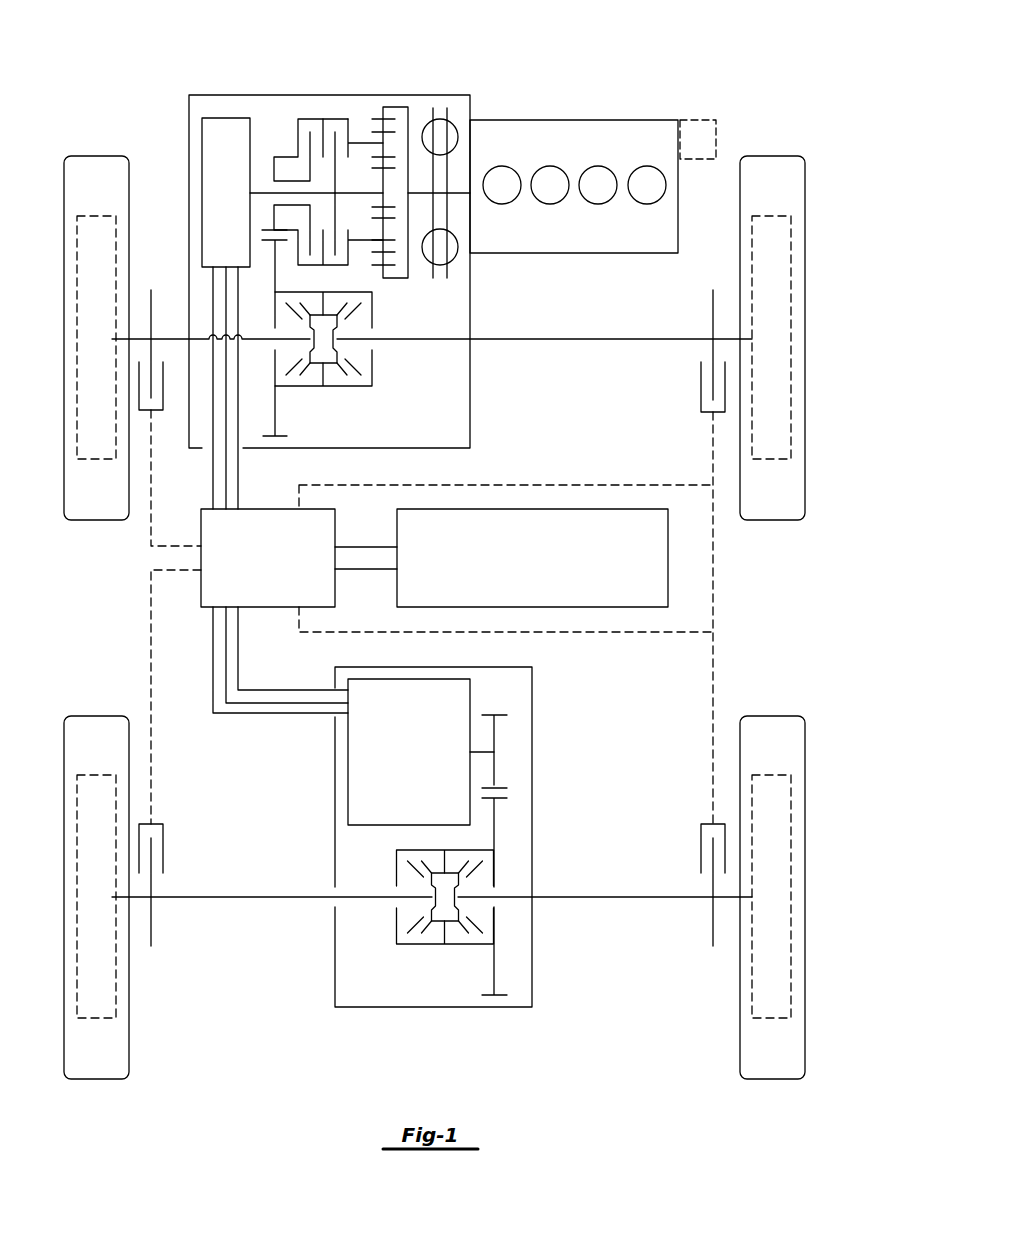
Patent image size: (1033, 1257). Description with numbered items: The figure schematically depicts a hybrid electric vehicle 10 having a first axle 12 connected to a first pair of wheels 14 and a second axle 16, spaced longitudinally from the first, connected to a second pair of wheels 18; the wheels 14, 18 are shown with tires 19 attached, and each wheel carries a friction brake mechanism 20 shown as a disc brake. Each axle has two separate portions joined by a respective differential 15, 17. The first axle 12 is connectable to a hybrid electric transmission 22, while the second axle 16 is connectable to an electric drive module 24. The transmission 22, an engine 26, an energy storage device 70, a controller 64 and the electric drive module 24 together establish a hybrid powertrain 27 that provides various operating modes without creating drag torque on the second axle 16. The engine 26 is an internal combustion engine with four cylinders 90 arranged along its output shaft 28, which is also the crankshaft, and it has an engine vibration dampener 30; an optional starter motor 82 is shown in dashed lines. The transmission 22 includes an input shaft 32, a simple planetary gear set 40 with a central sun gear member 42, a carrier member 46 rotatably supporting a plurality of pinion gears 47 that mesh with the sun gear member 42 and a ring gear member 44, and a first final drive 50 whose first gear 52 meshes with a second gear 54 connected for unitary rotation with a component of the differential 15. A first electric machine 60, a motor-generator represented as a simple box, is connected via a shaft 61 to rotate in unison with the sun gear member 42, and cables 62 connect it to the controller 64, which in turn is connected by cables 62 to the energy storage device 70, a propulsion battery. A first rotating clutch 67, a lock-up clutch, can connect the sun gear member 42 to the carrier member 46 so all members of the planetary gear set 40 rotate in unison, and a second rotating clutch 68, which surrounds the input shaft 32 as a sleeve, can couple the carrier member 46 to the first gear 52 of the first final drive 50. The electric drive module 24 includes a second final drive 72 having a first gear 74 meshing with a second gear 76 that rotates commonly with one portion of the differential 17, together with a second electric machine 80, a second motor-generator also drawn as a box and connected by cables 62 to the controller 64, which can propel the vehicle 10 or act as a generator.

The hybrid electric vehicle 10 is at (652, 55).
The first axle 12 is at (135, 337).
The first pair of wheels 14 is at (77, 415).
The differential 15 is at (386, 366).
The second axle 16 is at (266, 902).
The differential 17 is at (417, 958).
The second pair of wheels 18 is at (77, 974).
The tires 19 is at (96, 520).
The friction brake mechanism 20 is at (156, 360).
The hybrid electric transmission 22 is at (470, 310).
The electric drive module 24 is at (532, 772).
The engine 26 is at (566, 150).
The hybrid powertrain 27 is at (563, 278).
The output shaft 28 is at (460, 183).
The engine vibration dampener 30 is at (455, 272).
The input shaft 32 is at (417, 190).
The planetary gear set 40 is at (396, 272).
The sun gear member 42 is at (383, 208).
The ring gear member 44 is at (383, 108).
The carrier member 46 is at (360, 242).
The pinion gears 47 is at (383, 143).
The first final drive 50 is at (292, 398).
The first gear 52 is at (274, 223).
The second gear 54 is at (277, 414).
The first electric machine 60 is at (216, 202).
The shaft 61 is at (259, 189).
The cables 62 is at (238, 480).
The controller 64 is at (261, 565).
The first rotating clutch 67 is at (340, 158).
The second rotating clutch 68 is at (308, 152).
The energy storage device 70 is at (521, 565).
The second final drive 72 is at (512, 840).
The first gear 74 is at (494, 732).
The second gear 76 is at (494, 978).
The second electric machine 80 is at (404, 760).
The starter motor 82 is at (717, 133).
The cylinders 90 is at (502, 204).